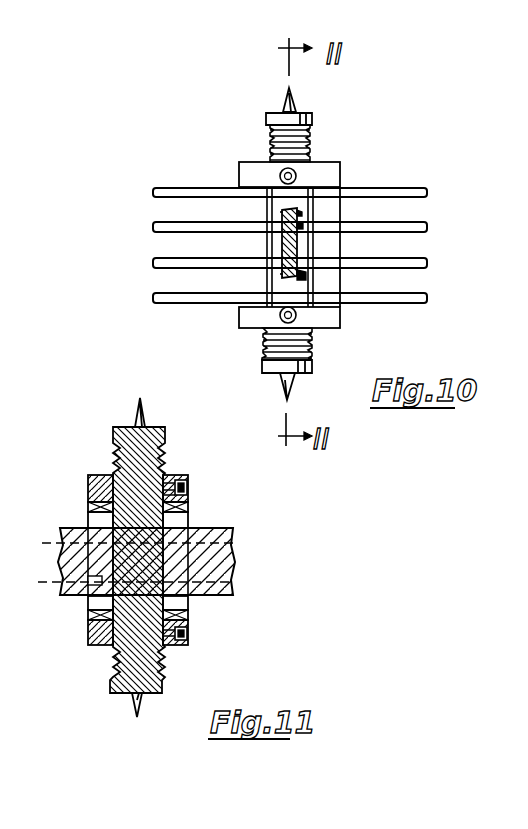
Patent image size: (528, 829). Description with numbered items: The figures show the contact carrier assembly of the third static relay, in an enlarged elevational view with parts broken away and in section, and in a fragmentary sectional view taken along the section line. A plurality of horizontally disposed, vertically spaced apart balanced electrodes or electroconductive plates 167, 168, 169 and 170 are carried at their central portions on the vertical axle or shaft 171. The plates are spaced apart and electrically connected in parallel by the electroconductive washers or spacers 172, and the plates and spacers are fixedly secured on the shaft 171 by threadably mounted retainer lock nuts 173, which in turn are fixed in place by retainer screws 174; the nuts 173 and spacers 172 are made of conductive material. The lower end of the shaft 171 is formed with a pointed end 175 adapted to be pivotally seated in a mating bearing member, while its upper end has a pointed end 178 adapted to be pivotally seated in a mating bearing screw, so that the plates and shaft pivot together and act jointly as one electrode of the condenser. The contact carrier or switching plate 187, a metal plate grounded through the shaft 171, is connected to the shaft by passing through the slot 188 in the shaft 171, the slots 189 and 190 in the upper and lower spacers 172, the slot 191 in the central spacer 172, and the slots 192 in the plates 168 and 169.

In FIG. 10, the balanced electrode plate 167 is at (153, 191).
In FIG. 11, the balanced electrode plate 167 is at (88, 507).
In FIG. 10, the balanced electrode plate 168 is at (153, 227).
In FIG. 11, the balanced electrode plate 168 is at (120, 544).
In FIG. 10, the balanced electrode plate 169 is at (153, 263).
In FIG. 11, the balanced electrode plate 169 is at (120, 582).
In FIG. 10, the balanced electrode plate 170 is at (153, 298).
In FIG. 11, the balanced electrode plate 170 is at (88, 615).
In FIG. 10, the vertical shaft 171 is at (313, 122).
In FIG. 11, the vertical shaft 171 is at (162, 456).
In FIG. 10, the spacer 172 is at (340, 211).
In FIG. 11, the spacer 172 is at (88, 520).
In FIG. 10, the retainer lock nut 173 is at (340, 172).
In FIG. 11, the retainer lock nut 173 is at (88, 482).
In FIG. 10, the retainer screw 174 is at (296, 172).
In FIG. 11, the retainer screw 174 is at (188, 487).
In FIG. 10, the pointed lower end 175 is at (290, 387).
In FIG. 11, the pointed lower end 175 is at (139, 705).
In FIG. 10, the pointed upper end 178 is at (292, 95).
In FIG. 11, the pointed upper end 178 is at (143, 404).
In FIG. 10, the switching plate 187 is at (282, 250).
In FIG. 11, the switching plate 187 is at (228, 532).
In FIG. 11, the slot in shaft 188 is at (190, 530).
In FIG. 10, the slot in upper spacer 189 is at (282, 214).
In FIG. 10, the slot in lower spacer 190 is at (282, 275).
In FIG. 10, the slot in central spacer 191 is at (303, 238).
In FIG. 10, the slot in plate 192 is at (302, 213).